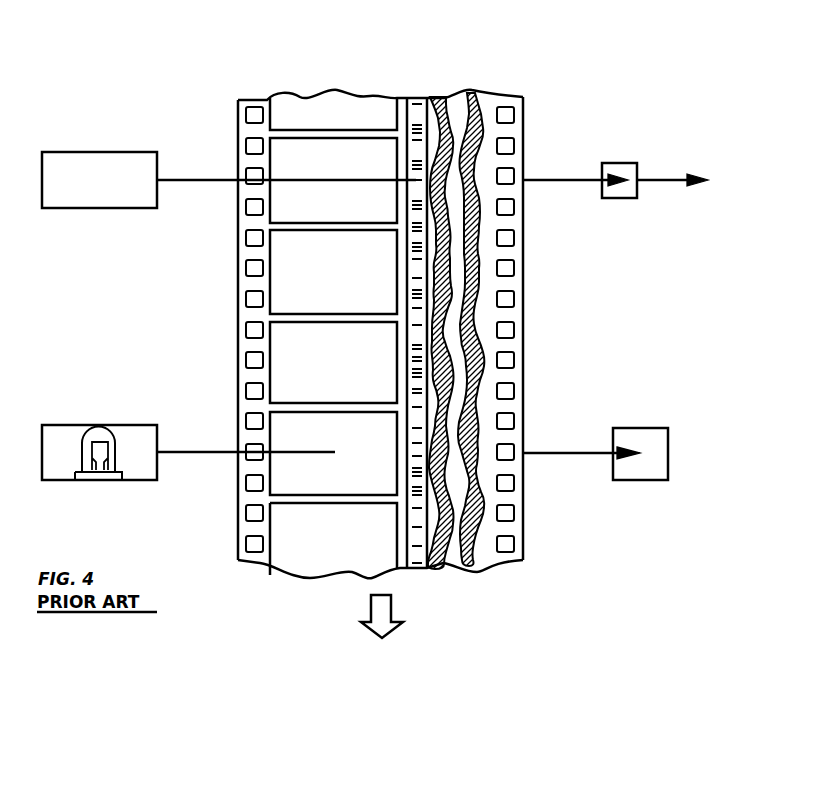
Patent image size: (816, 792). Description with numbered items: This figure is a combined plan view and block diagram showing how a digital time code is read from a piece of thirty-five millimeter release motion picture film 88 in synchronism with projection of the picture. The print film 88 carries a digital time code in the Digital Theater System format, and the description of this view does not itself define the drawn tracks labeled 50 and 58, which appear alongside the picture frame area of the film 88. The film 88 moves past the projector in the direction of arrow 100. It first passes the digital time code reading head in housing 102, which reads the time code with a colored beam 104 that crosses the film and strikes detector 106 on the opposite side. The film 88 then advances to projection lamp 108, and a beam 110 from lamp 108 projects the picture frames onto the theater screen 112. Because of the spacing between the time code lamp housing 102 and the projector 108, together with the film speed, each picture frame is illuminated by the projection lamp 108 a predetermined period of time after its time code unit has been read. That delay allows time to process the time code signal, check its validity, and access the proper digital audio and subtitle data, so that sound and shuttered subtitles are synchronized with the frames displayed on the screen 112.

The release motion picture film 88 is at (282, 86).
The digital sound track 50 is at (417, 100).
The analog sound tracks 58 is at (455, 105).
The arrow 100 is at (366, 605).
The housing 102 is at (80, 152).
The colored beam 104 is at (205, 179).
The detector 106 is at (618, 163).
The projection lamp 108 is at (68, 425).
The beam 110 is at (205, 451).
The theater screen 112 is at (640, 428).